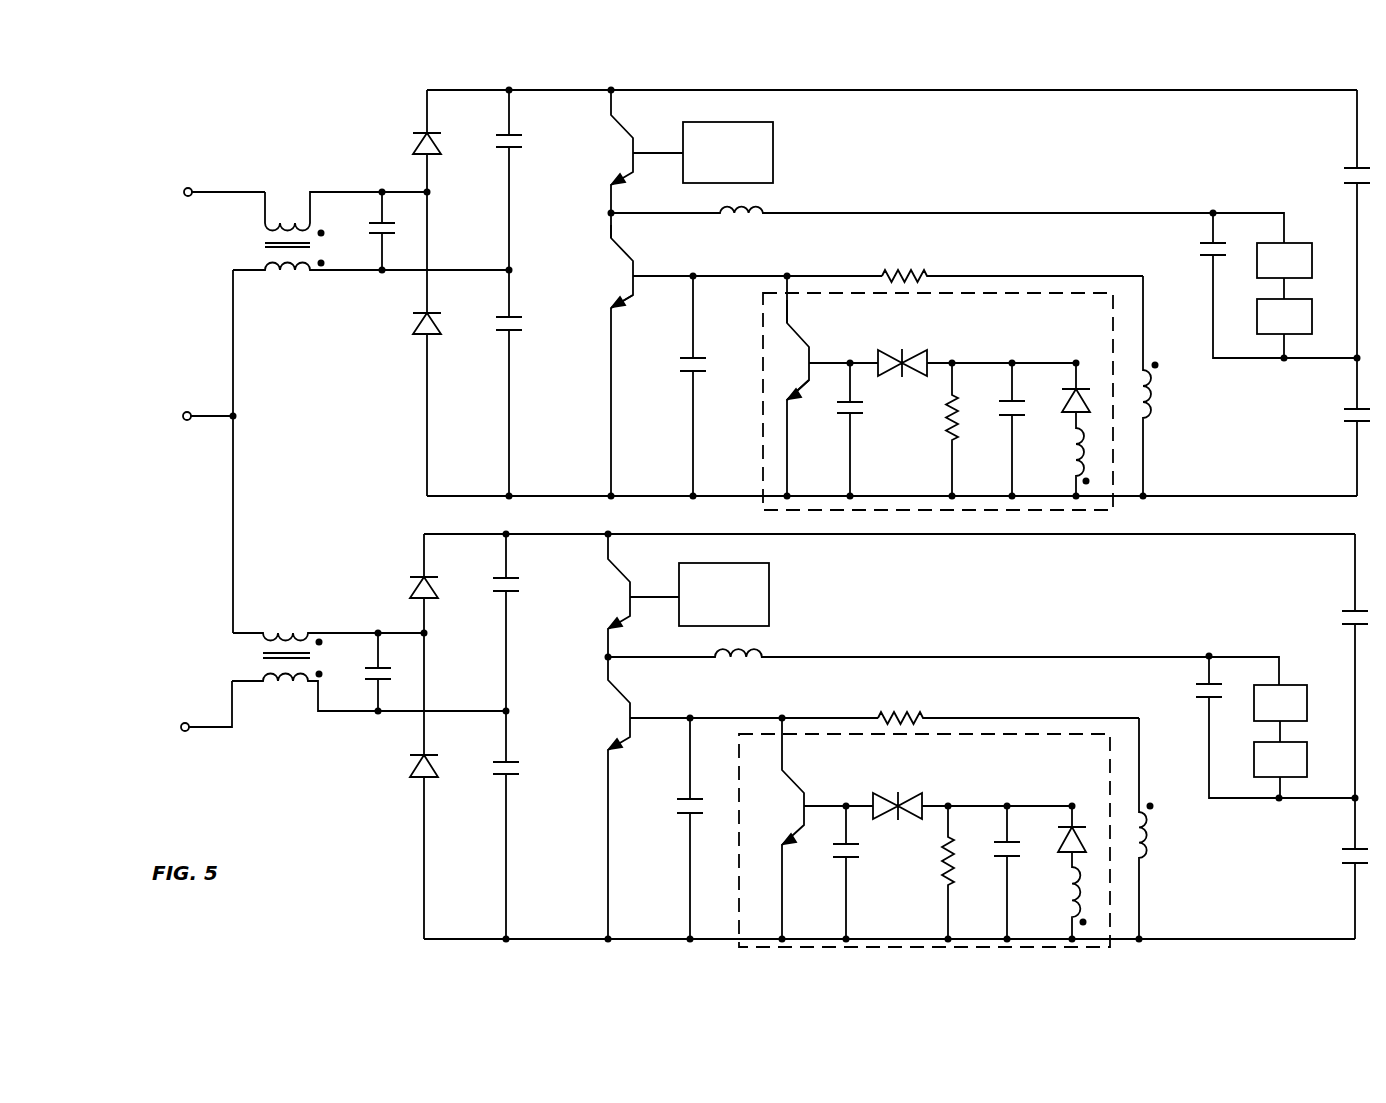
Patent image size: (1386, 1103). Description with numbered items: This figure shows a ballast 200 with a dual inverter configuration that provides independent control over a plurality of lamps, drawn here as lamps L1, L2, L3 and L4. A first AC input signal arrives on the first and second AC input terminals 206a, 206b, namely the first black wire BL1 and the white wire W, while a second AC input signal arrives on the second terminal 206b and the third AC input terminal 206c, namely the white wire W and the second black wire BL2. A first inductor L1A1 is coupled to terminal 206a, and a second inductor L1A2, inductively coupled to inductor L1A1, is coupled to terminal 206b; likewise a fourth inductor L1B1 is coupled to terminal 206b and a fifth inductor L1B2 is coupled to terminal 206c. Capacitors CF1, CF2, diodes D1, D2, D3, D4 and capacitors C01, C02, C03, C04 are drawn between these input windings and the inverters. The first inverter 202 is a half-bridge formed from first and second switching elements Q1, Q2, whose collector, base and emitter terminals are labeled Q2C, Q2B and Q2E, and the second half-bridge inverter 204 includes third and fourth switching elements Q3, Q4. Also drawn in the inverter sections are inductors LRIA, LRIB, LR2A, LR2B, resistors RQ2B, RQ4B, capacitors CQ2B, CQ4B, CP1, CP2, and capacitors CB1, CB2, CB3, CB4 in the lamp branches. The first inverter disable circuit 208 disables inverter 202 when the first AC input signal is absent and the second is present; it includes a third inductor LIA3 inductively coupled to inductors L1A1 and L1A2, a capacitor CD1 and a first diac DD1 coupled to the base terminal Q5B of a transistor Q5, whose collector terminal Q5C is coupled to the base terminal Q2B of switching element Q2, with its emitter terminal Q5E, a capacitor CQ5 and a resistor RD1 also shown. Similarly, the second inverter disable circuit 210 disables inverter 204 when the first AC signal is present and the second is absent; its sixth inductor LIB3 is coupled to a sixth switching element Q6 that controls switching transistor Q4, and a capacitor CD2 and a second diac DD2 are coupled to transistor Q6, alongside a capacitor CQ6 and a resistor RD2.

The ballast 200 is at (238, 136).
The first black wire BL1 is at (218, 174).
The second black wire BL2 is at (196, 723).
The white wire W is at (202, 432).
The first AC input terminal 206a is at (186, 197).
The second AC input terminal 206b is at (187, 410).
The third AC input terminal 206c is at (185, 722).
The first inductor L1A1 is at (345, 206).
The second inductor L1A2 is at (371, 287).
The fourth inductor L1B1 is at (328, 632).
The fifth inductor L1B2 is at (369, 693).
The first filter capacitor CF1 is at (365, 231).
The second filter capacitor CF2 is at (393, 672).
The rectifier diode D1 is at (410, 141).
The rectifier diode D2 is at (410, 344).
The rectifier diode D3 is at (408, 583).
The rectifier diode D4 is at (409, 786).
The output capacitor C01 is at (534, 180).
The output capacitor C02 is at (525, 383).
The output capacitor C03 is at (532, 622).
The output capacitor C04 is at (521, 825).
The first switching element Q1 is at (685, 151).
The second switching element Q2 is at (739, 260).
The collector of transistor Q2 Q2C is at (611, 232).
The base terminal Q2B is at (646, 276).
The emitter of transistor Q2 Q2E is at (625, 296).
The third switching element Q3 is at (682, 595).
The fourth switching element Q4 is at (736, 704).
The transistor Q5 is at (924, 386).
The collector terminal Q5C is at (787, 320).
The base terminal Q5B is at (810, 358).
The emitter of transistor Q5 Q5E is at (802, 384).
The sixth switching element Q6 is at (920, 828).
The first inverter 202 is at (1007, 151).
The second inverter 204 is at (1005, 595).
The first inverter disable circuit 208 is at (1010, 292).
The second inverter disable circuit 210 is at (1005, 735).
The resonant inductor winding LRIA is at (947, 225).
The resonant inductor feedback winding LRIB is at (1169, 386).
The resonant inductor winding LR2A is at (943, 671).
The resonant inductor feedback winding LR2B is at (1166, 828).
The third inductor LIA3 is at (1058, 429).
The sixth inductor LIB3 is at (1054, 872).
The base resistor RQ2B is at (1010, 262).
The base resistor RQ4B is at (1006, 703).
The base capacitor CQ2B is at (659, 386).
The base capacitor CQ4B is at (665, 828).
The capacitor CQ5 is at (868, 429).
The capacitor CQ6 is at (864, 872).
The first diac DD1 is at (902, 348).
The second diac DD2 is at (897, 791).
The resistor RD1 is at (927, 429).
The resistor RD2 is at (923, 872).
The capacitor CD1 is at (996, 429).
The capacitor CD2 is at (991, 872).
The resonant capacitor CP1 is at (1253, 285).
The resonant capacitor CP2 is at (1251, 727).
The ballast capacitor CB1 is at (1341, 224).
The ballast capacitor CB2 is at (1341, 427).
The ballast capacitor CB3 is at (1339, 666).
The ballast capacitor CB4 is at (1338, 868).
The lamp L1 is at (1284, 271).
The lamp L2 is at (1284, 328).
The lamp L3 is at (1280, 713).
The lamp L4 is at (1280, 770).